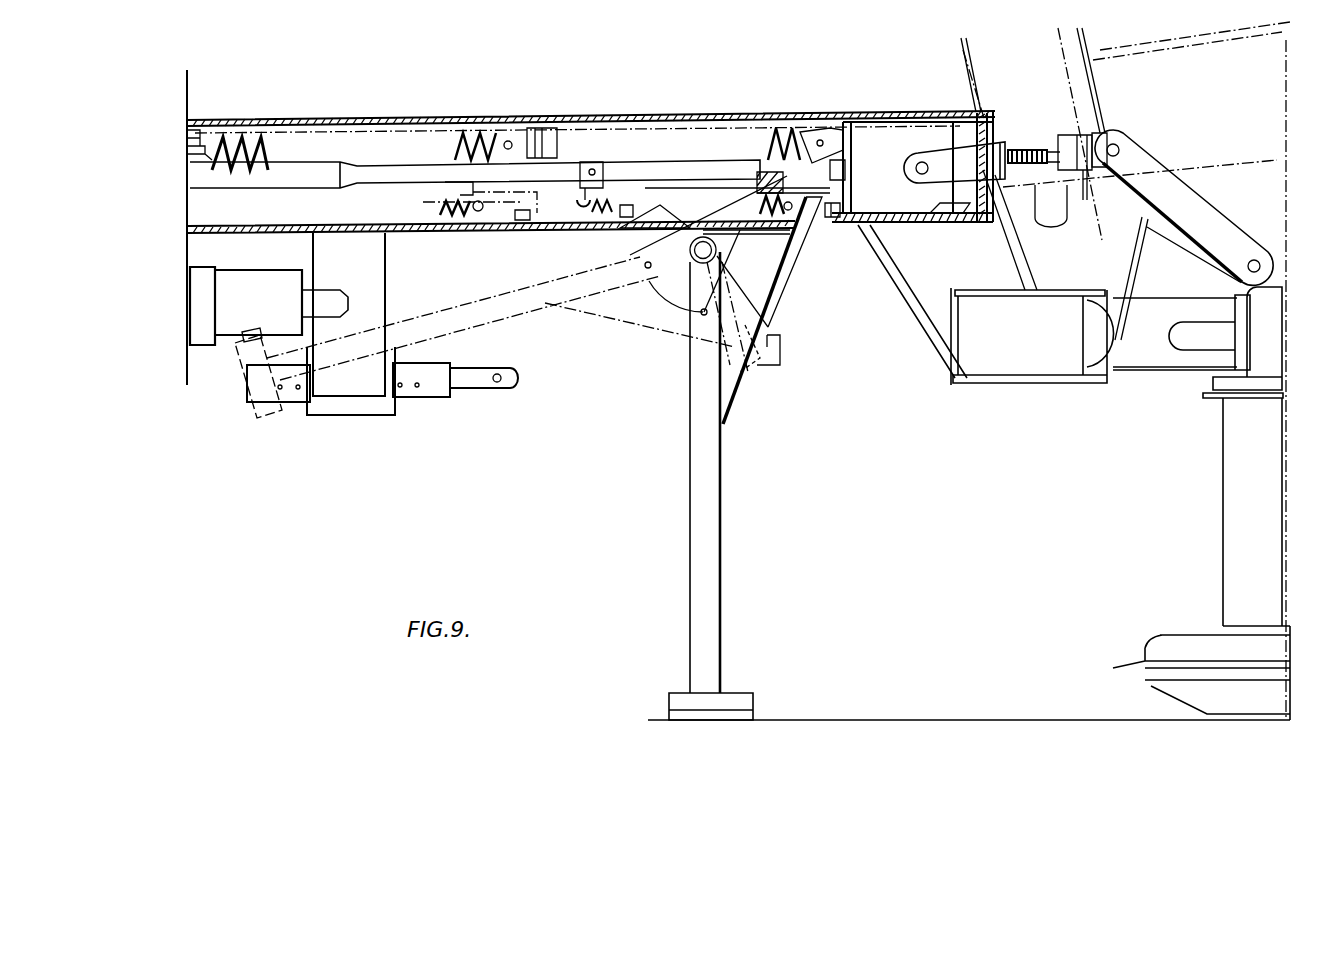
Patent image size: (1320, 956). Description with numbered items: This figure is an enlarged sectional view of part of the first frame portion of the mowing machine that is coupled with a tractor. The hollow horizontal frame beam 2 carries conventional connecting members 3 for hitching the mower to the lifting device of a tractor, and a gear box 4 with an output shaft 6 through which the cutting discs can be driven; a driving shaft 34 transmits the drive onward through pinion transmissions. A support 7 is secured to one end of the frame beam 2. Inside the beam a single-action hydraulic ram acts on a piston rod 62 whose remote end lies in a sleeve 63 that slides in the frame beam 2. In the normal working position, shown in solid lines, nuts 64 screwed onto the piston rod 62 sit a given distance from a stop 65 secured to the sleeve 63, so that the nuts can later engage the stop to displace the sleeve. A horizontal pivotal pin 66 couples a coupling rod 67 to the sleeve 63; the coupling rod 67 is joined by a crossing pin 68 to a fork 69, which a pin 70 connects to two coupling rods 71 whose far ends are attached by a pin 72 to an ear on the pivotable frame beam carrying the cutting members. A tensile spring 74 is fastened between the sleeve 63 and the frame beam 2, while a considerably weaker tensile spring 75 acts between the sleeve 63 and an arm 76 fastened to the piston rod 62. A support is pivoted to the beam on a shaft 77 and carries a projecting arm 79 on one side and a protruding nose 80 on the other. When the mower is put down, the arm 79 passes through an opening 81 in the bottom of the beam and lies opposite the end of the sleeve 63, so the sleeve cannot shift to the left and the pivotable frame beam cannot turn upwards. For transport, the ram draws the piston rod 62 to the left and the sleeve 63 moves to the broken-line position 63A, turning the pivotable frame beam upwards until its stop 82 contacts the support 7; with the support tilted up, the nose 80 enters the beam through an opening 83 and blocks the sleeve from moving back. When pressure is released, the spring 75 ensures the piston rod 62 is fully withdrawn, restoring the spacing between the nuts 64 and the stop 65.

The frame beam 2 is at (398, 120).
The connecting members 3 is at (428, 398).
The gear box 4 is at (204, 350).
The output shaft 6 is at (323, 292).
The support 7 is at (898, 296).
The driving shaft 34 is at (1195, 330).
The piston rod 62 is at (666, 170).
The sleeve 63 is at (906, 112).
The sleeve position 63A is at (540, 125).
The nuts 64 is at (850, 128).
The stop 65 is at (770, 172).
The pivotal pin 66 is at (920, 174).
The coupling rod 67 is at (1026, 148).
The pin 68 is at (1075, 128).
The fork 69 is at (1097, 132).
The pin 70 is at (1120, 148).
The coupling rods 71 is at (1195, 210).
The pin 72 is at (1255, 259).
The tensile spring 74 is at (776, 130).
The tensile spring 75 is at (578, 226).
The arm 76 is at (590, 160).
The shaft 77 is at (717, 253).
The projecting arm 79 is at (775, 308).
The nose 80 is at (657, 292).
The opening 81 is at (838, 218).
The stop 82 is at (1134, 250).
The opening 83 is at (632, 237).